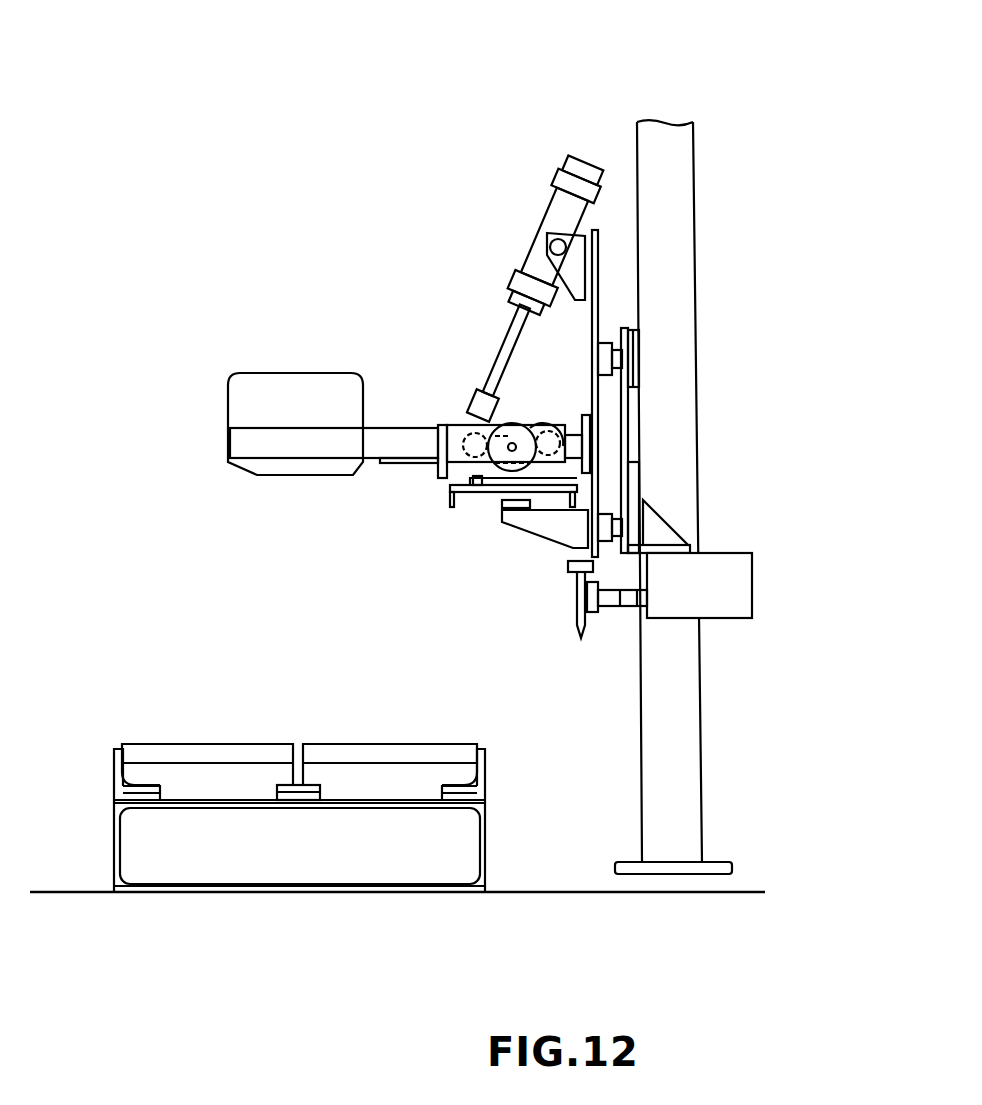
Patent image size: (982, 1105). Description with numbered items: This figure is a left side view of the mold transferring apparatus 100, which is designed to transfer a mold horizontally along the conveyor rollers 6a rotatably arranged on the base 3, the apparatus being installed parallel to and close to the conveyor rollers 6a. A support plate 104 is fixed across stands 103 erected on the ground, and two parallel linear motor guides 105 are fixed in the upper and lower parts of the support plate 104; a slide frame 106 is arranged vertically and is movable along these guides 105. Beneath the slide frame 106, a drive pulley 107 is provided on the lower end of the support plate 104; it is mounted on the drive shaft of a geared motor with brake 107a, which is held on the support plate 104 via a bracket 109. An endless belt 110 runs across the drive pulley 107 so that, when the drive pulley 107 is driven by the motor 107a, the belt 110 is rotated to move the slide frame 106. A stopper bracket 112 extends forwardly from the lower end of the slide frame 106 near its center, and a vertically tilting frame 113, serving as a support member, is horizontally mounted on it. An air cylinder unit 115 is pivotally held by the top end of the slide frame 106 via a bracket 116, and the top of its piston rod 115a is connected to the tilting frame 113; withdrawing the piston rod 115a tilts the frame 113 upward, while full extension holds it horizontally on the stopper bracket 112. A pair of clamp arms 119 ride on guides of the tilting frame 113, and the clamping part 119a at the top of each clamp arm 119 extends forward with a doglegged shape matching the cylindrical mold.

The transferring apparatus 100 is at (601, 128).
The stand 103 is at (697, 753).
The support plate 104 is at (625, 405).
The linear motor guide 105 is at (607, 360).
The slide frame 106 is at (594, 332).
The drive pulley 107 is at (577, 600).
The geared motor with brake 107a is at (745, 581).
The bracket 109 is at (658, 530).
The endless belt 110 is at (583, 640).
The stopper bracket 112 is at (537, 523).
The tilting frame 113 is at (467, 492).
The air cylinder unit 115 is at (562, 198).
The piston rod 115a is at (513, 353).
The bracket 116 is at (577, 292).
The clamp arm 119 is at (402, 448).
The clamping part 119a is at (293, 468).
The base 3 is at (492, 800).
The conveyor roller 6a is at (323, 747).